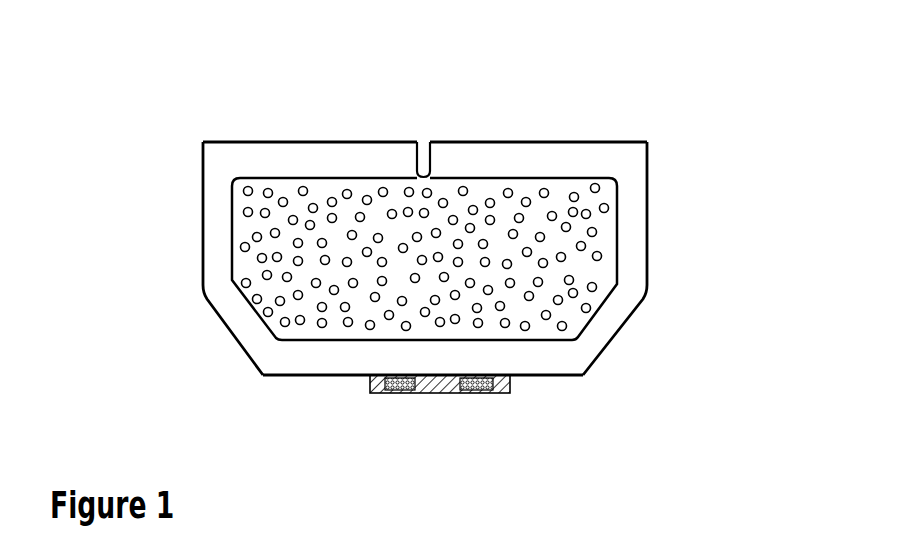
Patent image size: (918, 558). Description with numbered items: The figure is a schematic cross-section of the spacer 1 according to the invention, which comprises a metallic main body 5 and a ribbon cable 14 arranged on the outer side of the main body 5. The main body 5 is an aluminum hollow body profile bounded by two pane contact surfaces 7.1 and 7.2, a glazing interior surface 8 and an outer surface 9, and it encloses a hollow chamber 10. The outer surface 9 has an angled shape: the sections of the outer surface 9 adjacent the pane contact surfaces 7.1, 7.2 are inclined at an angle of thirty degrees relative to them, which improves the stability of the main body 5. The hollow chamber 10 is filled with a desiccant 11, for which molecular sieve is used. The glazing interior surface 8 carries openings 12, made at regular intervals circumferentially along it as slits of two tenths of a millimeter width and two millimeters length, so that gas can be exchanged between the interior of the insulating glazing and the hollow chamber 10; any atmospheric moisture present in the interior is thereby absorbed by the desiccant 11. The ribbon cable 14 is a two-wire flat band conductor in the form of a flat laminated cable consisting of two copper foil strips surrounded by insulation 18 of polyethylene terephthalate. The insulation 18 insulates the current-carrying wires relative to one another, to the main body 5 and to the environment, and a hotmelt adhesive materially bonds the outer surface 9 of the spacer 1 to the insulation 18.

The spacer 1 is at (425, 187).
The metallic main body 5 is at (427, 252).
The pane contact surface 7.1 is at (157, 235).
The pane contact surface 7.2 is at (692, 253).
The glazing interior surface 8 is at (425, 81).
The outer surface 9 is at (423, 429).
The hollow chamber 10 is at (321, 259).
The desiccant 11 is at (672, 234).
The openings 12 is at (462, 90).
The ribbon cable 14 is at (441, 448).
The insulation 18 is at (508, 446).